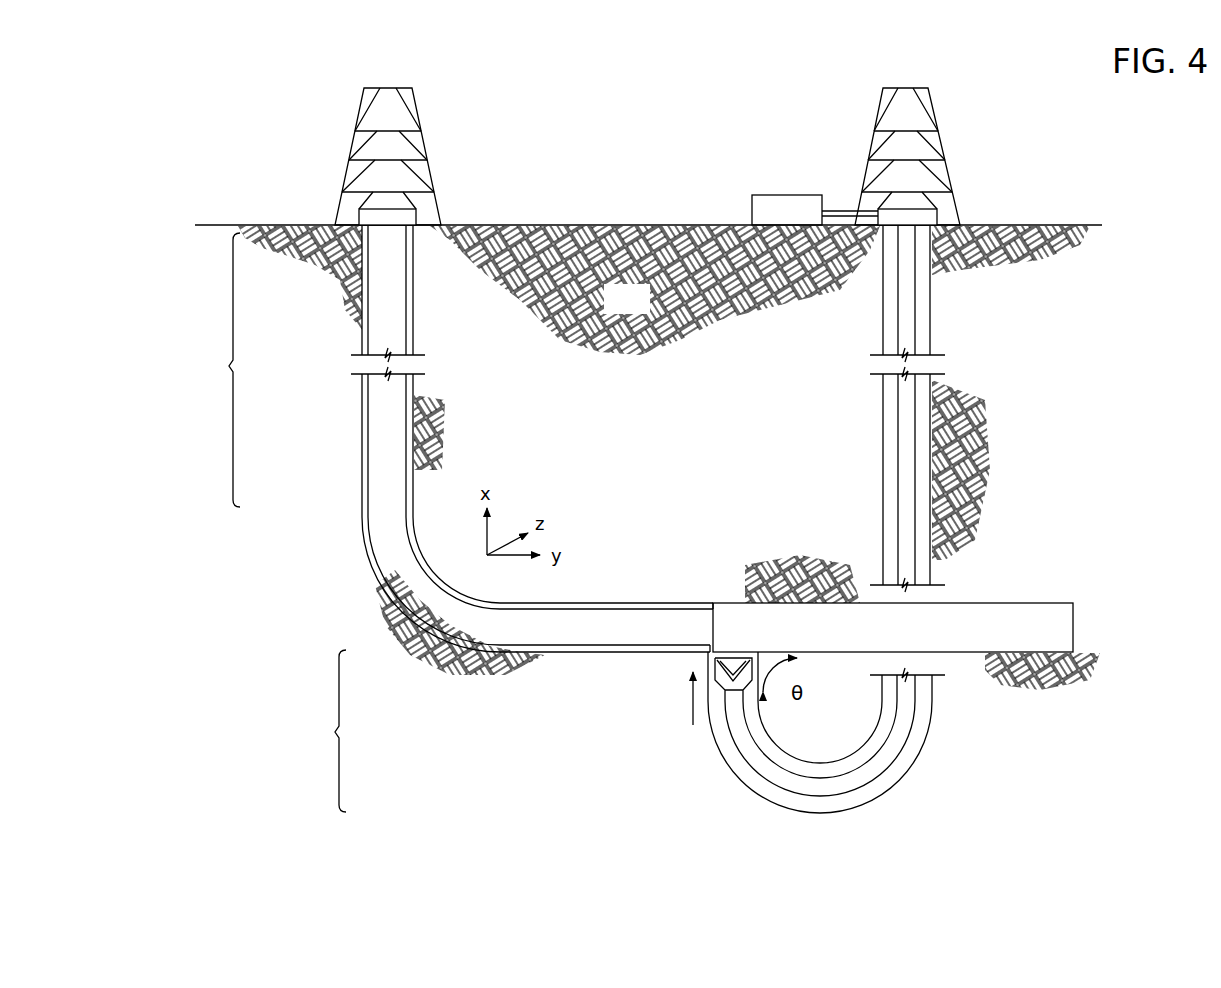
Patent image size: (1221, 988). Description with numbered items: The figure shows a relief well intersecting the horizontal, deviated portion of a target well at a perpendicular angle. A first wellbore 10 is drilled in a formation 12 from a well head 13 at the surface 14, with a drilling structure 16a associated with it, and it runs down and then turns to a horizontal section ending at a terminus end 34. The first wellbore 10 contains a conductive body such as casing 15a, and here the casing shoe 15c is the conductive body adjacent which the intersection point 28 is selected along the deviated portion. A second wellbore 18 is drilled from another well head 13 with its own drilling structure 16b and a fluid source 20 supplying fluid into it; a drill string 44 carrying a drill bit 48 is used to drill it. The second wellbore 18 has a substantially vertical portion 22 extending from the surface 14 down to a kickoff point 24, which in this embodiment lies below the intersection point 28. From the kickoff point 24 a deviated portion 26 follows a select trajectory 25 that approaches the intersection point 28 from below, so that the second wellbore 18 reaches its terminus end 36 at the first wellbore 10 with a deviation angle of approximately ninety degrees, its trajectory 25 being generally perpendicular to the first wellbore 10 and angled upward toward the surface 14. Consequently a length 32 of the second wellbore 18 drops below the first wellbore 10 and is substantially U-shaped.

The first wellbore 10 is at (342, 407).
The formation 12 is at (644, 312).
The well head 13 is at (404, 207).
The surface 14 is at (1079, 224).
The casing 15a is at (366, 528).
The casing shoe 15c is at (713, 603).
The drilling structure 16a is at (358, 118).
The drilling structure 16b is at (873, 112).
The second wellbore 18 is at (883, 430).
The fluid source 20 is at (776, 195).
The substantially vertical portion 22 is at (229, 366).
The kickoff point 24 is at (933, 718).
The deviated portion 26 is at (876, 792).
The trajectory 25 is at (688, 714).
The intersection point 28 is at (738, 656).
The length 32 is at (335, 732).
The terminus end 34 is at (1075, 624).
The terminus end 36 is at (713, 652).
The drill string 44 is at (917, 450).
The drill bit 48 is at (733, 679).